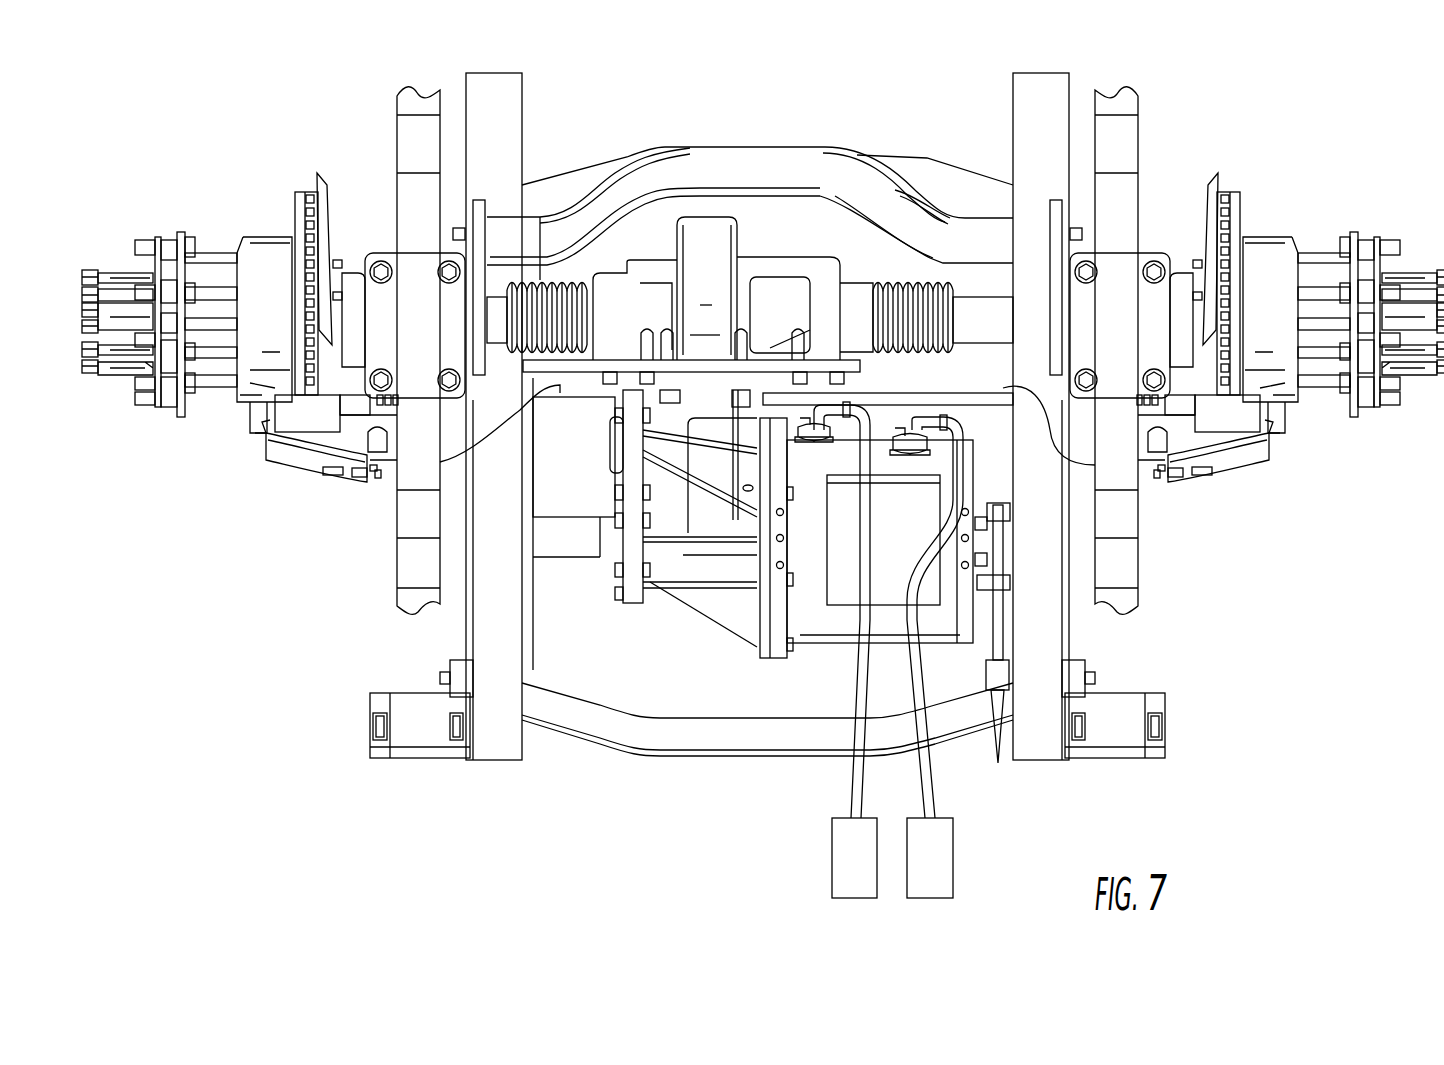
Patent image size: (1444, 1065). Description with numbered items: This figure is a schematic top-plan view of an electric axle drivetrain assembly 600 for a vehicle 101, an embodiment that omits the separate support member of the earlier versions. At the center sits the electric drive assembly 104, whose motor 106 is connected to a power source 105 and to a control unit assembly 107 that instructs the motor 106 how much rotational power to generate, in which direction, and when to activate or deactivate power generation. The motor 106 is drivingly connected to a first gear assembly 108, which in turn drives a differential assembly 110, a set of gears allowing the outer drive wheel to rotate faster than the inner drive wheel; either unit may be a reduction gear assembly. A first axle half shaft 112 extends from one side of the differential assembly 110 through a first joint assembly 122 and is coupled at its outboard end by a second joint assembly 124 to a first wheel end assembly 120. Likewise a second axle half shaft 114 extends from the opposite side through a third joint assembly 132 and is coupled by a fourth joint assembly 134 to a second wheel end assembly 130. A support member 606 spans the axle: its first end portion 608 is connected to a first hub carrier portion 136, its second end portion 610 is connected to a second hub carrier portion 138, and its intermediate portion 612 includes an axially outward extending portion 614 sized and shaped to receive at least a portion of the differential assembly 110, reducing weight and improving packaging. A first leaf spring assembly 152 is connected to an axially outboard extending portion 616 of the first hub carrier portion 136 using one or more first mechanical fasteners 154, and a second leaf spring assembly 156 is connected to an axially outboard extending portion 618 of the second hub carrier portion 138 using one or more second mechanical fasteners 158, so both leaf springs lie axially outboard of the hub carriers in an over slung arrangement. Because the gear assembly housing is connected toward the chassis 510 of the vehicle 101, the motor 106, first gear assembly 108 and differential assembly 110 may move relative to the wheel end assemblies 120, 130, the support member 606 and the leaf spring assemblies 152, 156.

The vehicle 101 is at (1240, 73).
The electric axle drivetrain assembly 600 is at (1277, 107).
The first wheel end assembly 120 is at (1335, 181).
The second wheel end assembly 130 is at (162, 490).
The second joint assembly 124 is at (347, 218).
The fourth joint assembly 134 is at (1193, 210).
The second hub carrier portion 138 is at (478, 212).
The first hub carrier portion 136 is at (1055, 223).
The axially outboard extending portion 618 is at (353, 275).
The axially outboard extending portion 616 is at (1182, 285).
The second mechanical fasteners 158 is at (380, 365).
The first mechanical fasteners 154 is at (1085, 368).
The second leaf spring assembly 156 is at (413, 565).
The first leaf spring assembly 152 is at (1125, 568).
The chassis 510 is at (495, 743).
The second axle half shaft 114 is at (500, 293).
The first axle half shaft 112 is at (1003, 302).
The differential assembly 110 is at (697, 230).
The intermediate portion 612 is at (715, 147).
The support member 606 is at (740, 160).
The axially outward extending portion 614 is at (780, 148).
The second end portion 610 is at (557, 223).
The first end portion 608 is at (1002, 238).
The third joint assembly 132 is at (888, 268).
The first joint assembly 122 is at (568, 420).
The first gear assembly 108 is at (667, 572).
The motor 106 is at (912, 527).
The power source 105 is at (845, 848).
The control unit assembly 107 is at (948, 852).
The electric drive assembly 104 is at (703, 693).